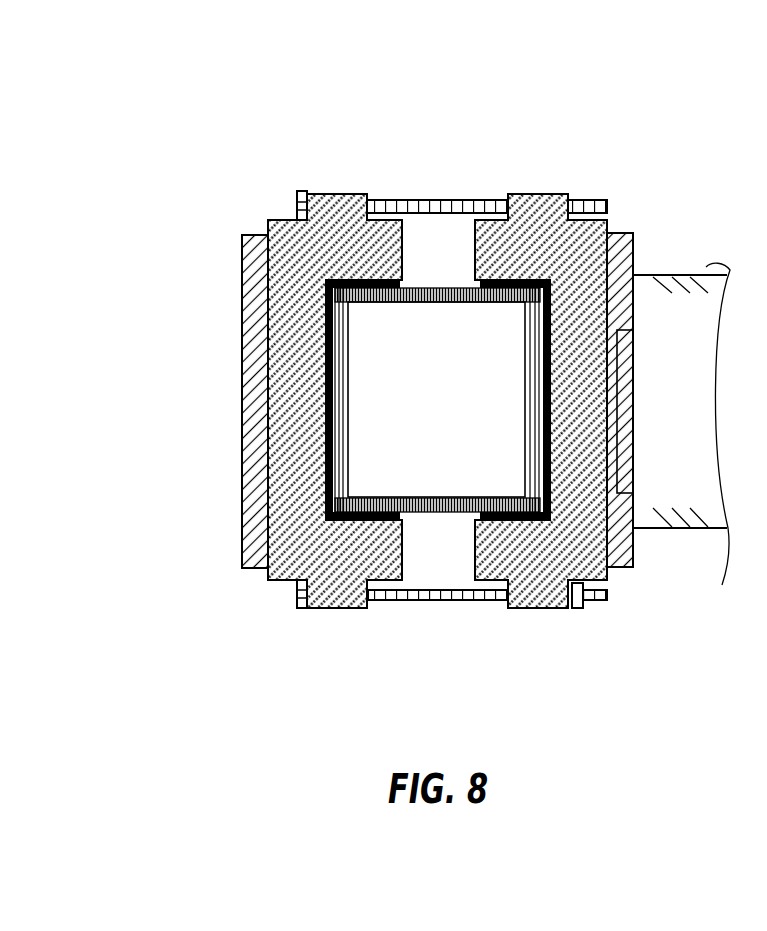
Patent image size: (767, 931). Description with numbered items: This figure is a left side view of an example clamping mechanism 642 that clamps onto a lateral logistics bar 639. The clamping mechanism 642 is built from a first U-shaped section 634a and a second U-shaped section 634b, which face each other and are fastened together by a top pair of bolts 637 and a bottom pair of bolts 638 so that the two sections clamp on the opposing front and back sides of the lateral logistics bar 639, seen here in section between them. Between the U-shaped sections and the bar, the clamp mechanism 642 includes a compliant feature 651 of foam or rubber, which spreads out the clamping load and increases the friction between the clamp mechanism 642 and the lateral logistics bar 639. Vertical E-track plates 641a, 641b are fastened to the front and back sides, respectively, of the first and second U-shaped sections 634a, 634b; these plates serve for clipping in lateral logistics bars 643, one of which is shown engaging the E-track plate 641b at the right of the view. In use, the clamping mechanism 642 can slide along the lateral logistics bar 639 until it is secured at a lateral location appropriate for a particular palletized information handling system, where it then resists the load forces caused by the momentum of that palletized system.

The first U-shaped section 634a is at (285, 497).
The second U-shaped section 634b is at (530, 213).
The top pair of bolts 637 is at (433, 200).
The bottom pair of bolts 638 is at (458, 602).
The lateral logistics bar 639 is at (340, 368).
The vertical E-track plate 641a is at (243, 547).
The vertical E-track plate 641b is at (622, 535).
The clamping mechanism 642 is at (416, 384).
The lateral logistics bar 643 is at (707, 265).
The compliant feature 651 is at (330, 287).